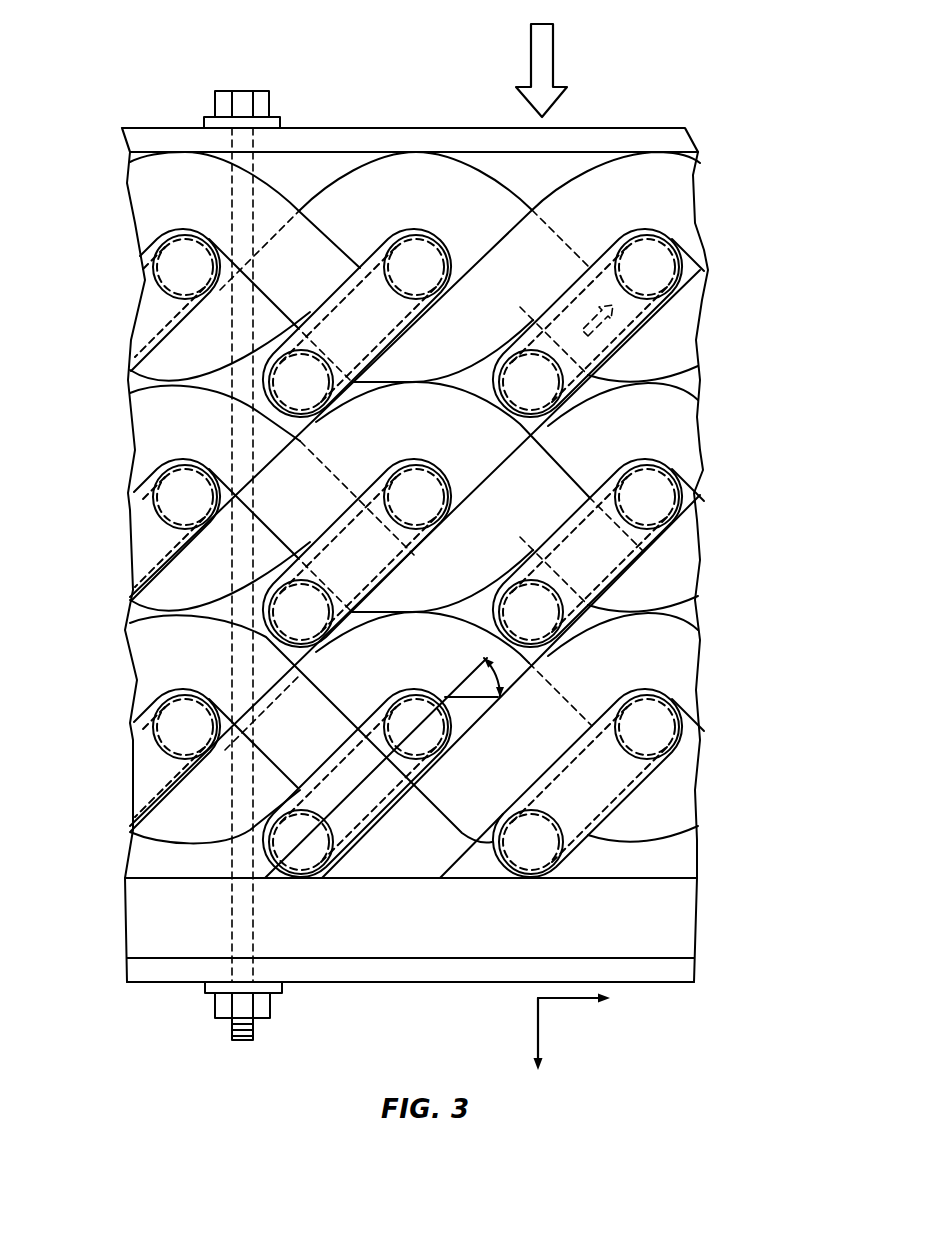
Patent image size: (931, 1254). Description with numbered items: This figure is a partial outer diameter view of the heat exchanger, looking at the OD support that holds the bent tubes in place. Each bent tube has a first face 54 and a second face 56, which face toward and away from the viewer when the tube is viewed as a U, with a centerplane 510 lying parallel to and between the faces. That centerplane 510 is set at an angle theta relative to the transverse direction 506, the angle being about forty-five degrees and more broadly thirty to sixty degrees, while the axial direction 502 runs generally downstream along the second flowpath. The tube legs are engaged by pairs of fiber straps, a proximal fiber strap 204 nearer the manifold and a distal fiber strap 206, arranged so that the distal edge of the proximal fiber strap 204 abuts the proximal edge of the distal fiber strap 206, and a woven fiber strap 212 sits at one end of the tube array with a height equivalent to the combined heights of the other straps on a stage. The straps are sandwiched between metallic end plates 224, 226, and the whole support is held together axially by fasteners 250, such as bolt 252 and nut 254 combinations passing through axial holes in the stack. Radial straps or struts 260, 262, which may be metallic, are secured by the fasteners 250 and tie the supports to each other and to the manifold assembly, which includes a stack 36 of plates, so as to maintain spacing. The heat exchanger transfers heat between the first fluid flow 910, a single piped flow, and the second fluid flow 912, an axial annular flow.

The stack of plates 36 is at (773, 237).
The first face 54 is at (390, 818).
The second face 56 is at (326, 748).
The proximal fiber strap 204 is at (410, 180).
The distal fiber strap 206 is at (165, 200).
The woven fiber strap 212 is at (152, 917).
The end plate 224 is at (705, 970).
The end plate 226 is at (660, 120).
The fastener 250 is at (262, 70).
The bolt 252 is at (293, 97).
The nut 254 is at (298, 1020).
The radial strap 260 is at (200, 1000).
The radial strap 262 is at (195, 120).
The axial direction 502 is at (542, 1037).
The transverse direction 506 is at (573, 1002).
The centerplane 510 is at (480, 662).
The first fluid flow 910 is at (578, 306).
The second fluid flow 912 is at (540, 43).